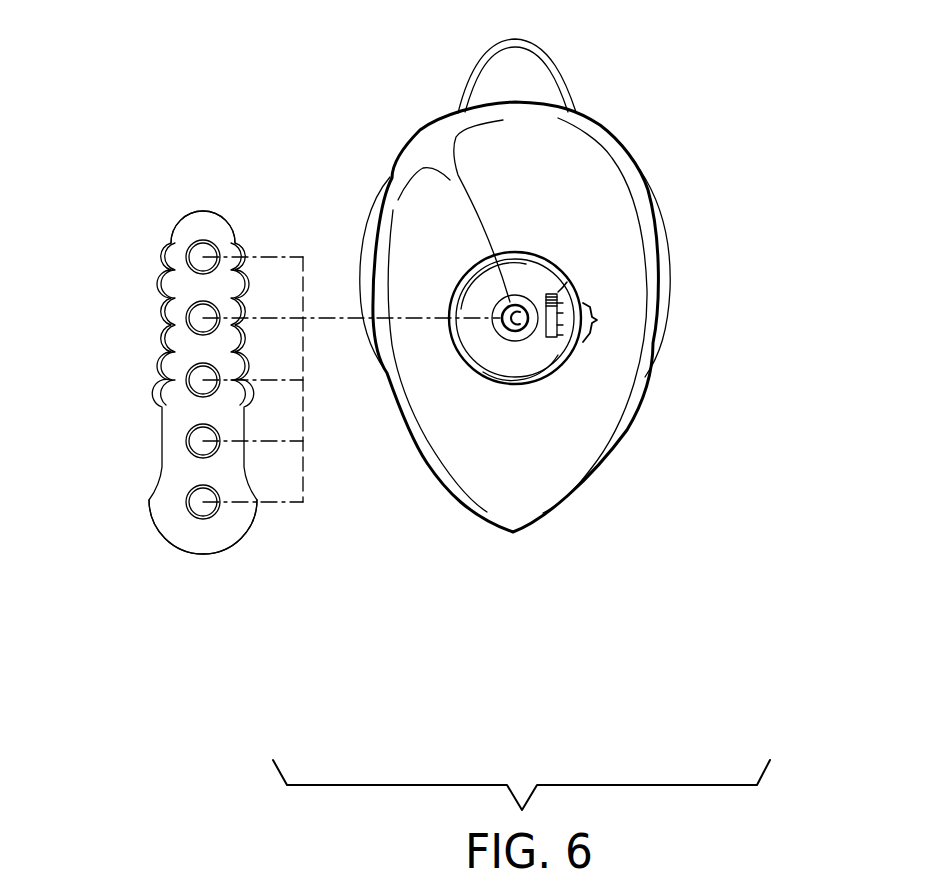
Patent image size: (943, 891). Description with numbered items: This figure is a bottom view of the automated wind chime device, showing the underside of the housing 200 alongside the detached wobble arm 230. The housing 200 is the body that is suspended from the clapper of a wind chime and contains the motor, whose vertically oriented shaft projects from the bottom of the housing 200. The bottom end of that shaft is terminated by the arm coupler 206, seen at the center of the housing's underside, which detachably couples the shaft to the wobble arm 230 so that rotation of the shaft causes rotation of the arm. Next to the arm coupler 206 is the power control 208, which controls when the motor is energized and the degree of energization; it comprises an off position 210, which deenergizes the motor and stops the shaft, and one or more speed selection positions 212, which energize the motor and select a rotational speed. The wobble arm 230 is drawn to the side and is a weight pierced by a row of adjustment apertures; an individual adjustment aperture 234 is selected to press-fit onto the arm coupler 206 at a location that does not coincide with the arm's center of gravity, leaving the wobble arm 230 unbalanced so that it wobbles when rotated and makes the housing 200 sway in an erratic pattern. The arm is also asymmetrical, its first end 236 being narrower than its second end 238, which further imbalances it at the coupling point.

The housing 200 is at (578, 143).
The arm coupler 206 is at (458, 188).
The power control 208 is at (551, 337).
The off position 210 is at (562, 290).
The speed selection positions 212 is at (597, 322).
The wobble arm 230 is at (174, 382).
The individual adjustment aperture 234 is at (185, 380).
The first end 236 is at (203, 178).
The second end 238 is at (203, 592).